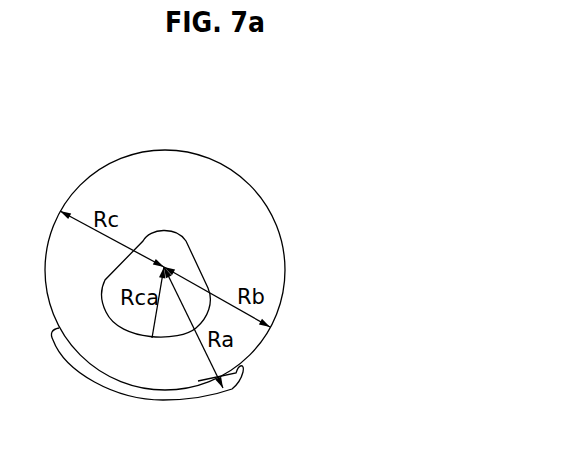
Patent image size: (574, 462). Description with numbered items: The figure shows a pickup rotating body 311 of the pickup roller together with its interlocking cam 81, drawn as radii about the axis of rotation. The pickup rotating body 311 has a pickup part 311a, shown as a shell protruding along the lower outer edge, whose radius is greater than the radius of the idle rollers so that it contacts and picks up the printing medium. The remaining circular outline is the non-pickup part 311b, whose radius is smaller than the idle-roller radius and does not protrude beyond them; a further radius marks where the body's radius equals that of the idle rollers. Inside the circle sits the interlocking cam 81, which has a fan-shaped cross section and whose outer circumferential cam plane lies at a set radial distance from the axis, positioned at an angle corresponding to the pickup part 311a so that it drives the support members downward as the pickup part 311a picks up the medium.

The pickup rotating body 311 is at (268, 188).
The pickup part 311a is at (214, 390).
The non-pickup part 311b is at (261, 342).
The interlocking cam 81 is at (147, 228).